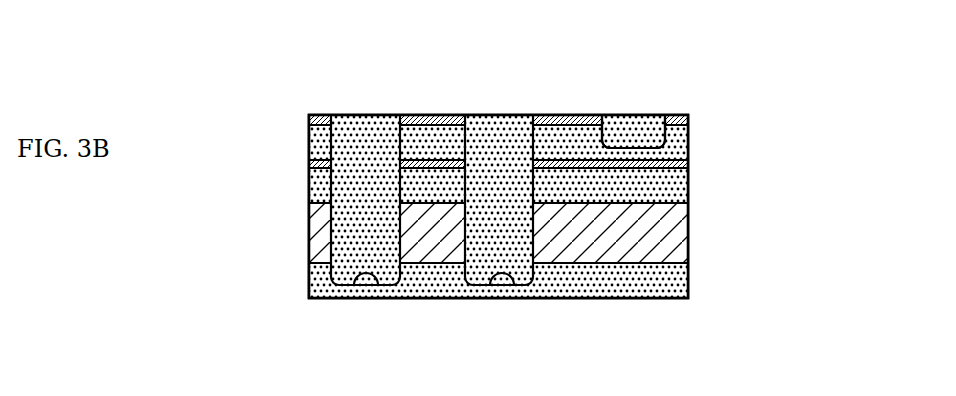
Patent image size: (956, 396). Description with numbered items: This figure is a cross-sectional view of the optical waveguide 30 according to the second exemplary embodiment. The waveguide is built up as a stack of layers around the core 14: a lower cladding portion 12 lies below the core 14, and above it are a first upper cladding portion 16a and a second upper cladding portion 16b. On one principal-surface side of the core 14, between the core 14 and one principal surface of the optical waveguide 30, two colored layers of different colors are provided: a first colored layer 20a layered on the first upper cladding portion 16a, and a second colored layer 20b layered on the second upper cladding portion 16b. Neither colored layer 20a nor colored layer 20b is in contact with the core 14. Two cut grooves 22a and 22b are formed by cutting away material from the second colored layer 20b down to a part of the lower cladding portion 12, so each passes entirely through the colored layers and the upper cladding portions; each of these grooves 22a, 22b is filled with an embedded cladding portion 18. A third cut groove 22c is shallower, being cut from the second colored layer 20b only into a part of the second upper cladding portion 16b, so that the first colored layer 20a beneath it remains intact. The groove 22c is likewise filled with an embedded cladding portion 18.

The lower cladding portion 12 is at (688, 274).
The core 14 is at (440, 250).
The first upper cladding portion 16a is at (310, 190).
The second upper cladding portion 16b is at (310, 141).
The embedded cladding portion 18 is at (350, 126).
The first colored layer 20a is at (417, 148).
The second colored layer 20b is at (432, 124).
The cut groove 22a is at (377, 292).
The cut groove 22b is at (510, 292).
The cut groove 22c is at (657, 117).
The optical waveguide 30 is at (808, 72).